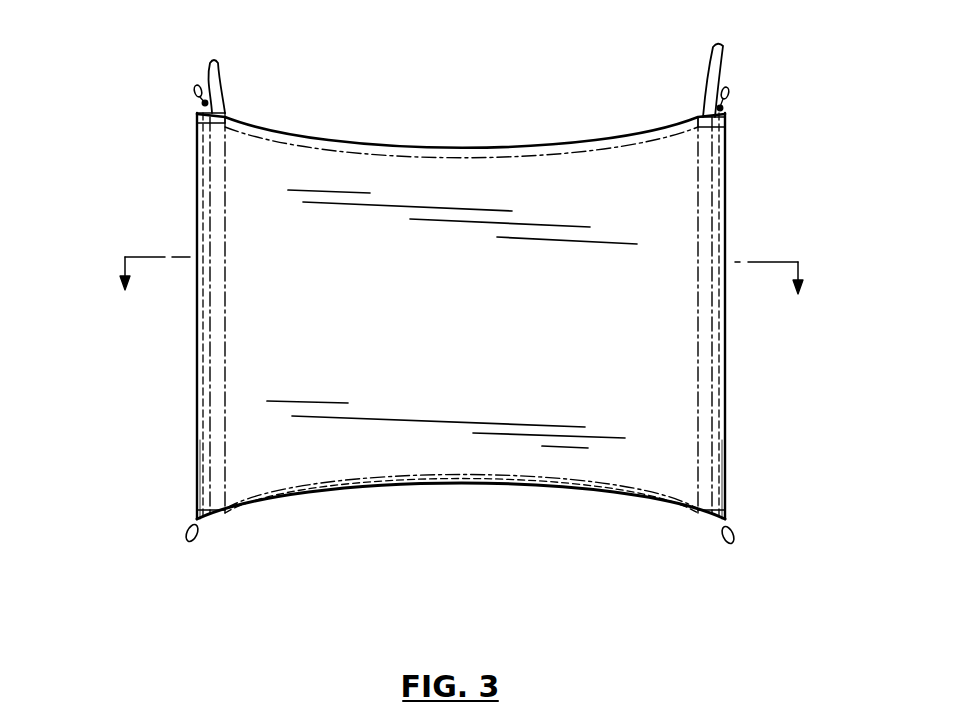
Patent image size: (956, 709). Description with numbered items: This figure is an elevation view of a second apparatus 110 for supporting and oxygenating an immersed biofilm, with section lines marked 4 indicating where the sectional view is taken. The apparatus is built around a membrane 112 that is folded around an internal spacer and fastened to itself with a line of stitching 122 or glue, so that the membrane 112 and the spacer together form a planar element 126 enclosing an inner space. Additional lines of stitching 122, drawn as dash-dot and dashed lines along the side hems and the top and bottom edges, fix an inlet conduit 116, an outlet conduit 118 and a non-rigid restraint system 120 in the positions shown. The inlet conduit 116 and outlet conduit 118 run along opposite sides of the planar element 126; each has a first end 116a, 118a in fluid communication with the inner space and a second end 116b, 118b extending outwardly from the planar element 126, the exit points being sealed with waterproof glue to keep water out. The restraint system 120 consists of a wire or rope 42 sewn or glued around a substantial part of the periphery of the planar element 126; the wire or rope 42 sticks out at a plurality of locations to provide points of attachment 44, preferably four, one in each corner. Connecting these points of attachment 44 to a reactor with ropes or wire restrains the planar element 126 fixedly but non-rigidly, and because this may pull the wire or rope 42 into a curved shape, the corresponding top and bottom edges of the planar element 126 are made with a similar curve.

The second apparatus 110 is at (714, 589).
The membrane 112 is at (481, 325).
The inlet conduit 116 is at (215, 201).
The first end of inlet conduit 116a is at (217, 474).
The second end of inlet conduit 116b is at (224, 68).
The outlet conduit 118 is at (724, 372).
The first end of outlet conduit 118a is at (724, 430).
The second end of outlet conduit 118b is at (708, 70).
The non-rigid restraint system 120 is at (195, 98).
The line of stitching 122 is at (215, 368).
The planar element 126 is at (735, 343).
The wire or rope 42 is at (199, 87).
The points of attachment 44 is at (195, 90).
The section line 4- 4 is at (459, 289).